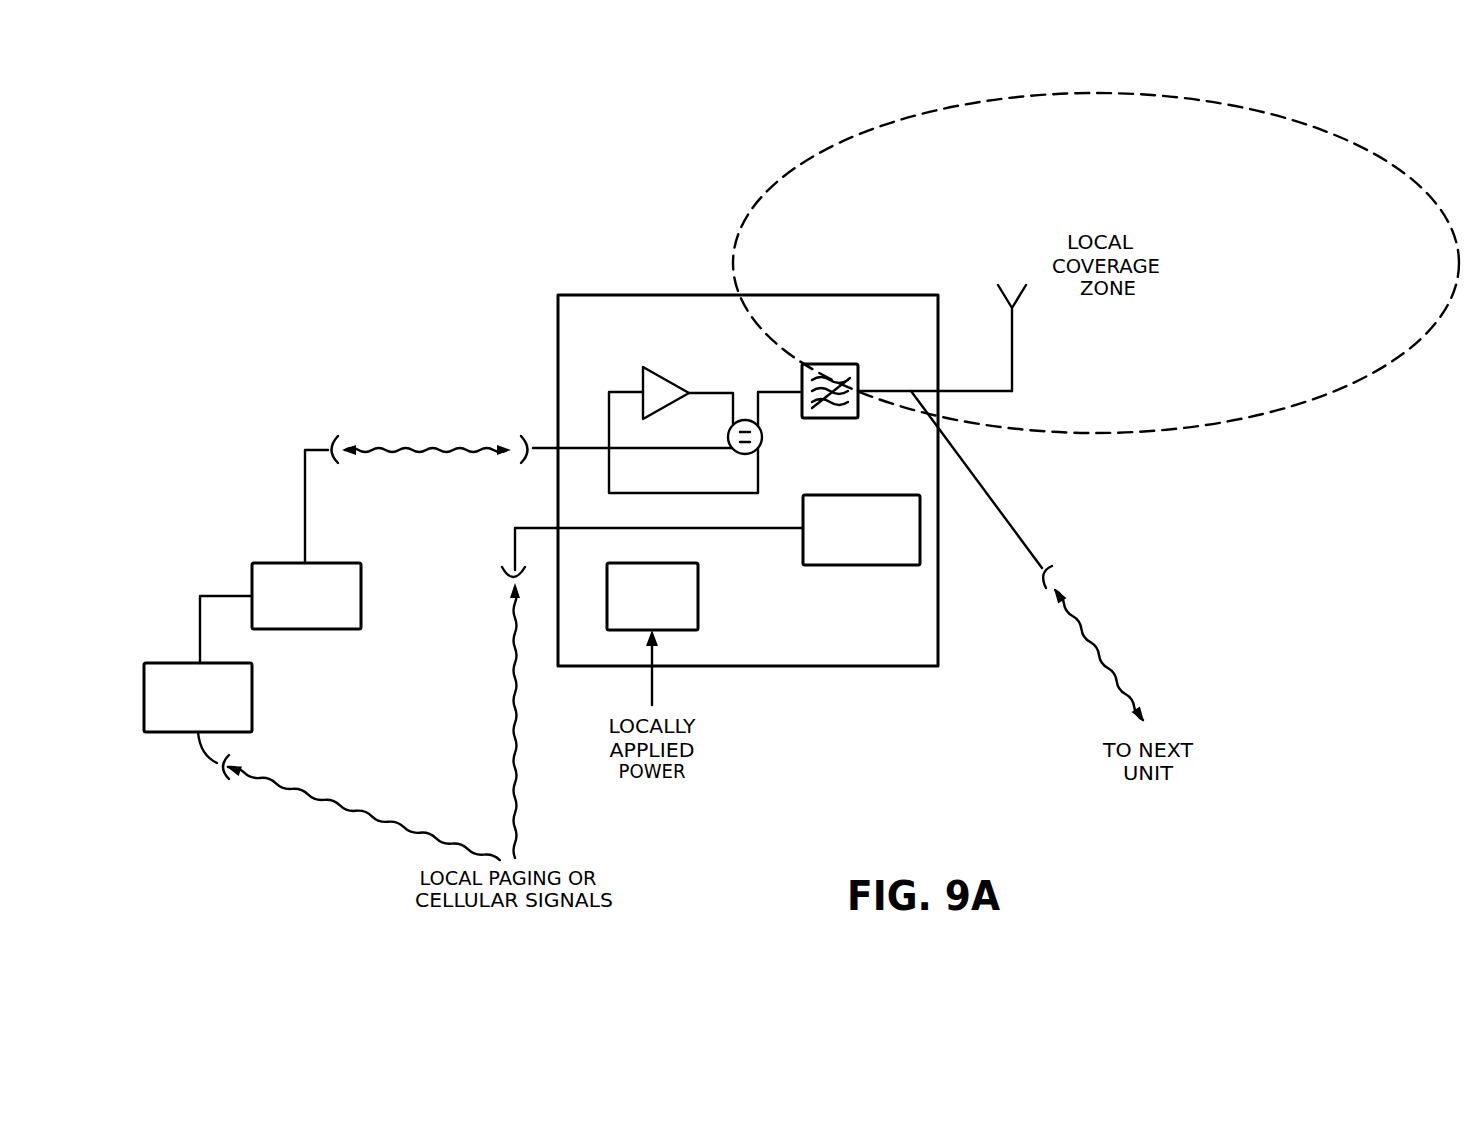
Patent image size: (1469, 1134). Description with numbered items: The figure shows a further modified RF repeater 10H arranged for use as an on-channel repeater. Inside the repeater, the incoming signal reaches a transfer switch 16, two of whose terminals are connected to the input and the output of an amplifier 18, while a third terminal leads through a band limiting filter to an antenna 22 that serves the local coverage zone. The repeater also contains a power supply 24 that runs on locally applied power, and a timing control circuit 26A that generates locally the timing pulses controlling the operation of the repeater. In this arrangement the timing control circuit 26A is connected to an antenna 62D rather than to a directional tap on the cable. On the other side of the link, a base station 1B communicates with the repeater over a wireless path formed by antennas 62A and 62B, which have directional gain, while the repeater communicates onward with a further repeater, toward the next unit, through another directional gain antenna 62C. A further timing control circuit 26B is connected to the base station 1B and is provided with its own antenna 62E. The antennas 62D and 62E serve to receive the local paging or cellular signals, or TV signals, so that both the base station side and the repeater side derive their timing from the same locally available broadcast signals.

The RF repeater 10H is at (538, 320).
The amplifier 18 is at (662, 377).
The transfer switch 16 is at (763, 436).
The antenna 22 is at (1012, 342).
The power supply 24 is at (698, 608).
The timing control circuit 26A is at (923, 565).
The timing control circuit 26B is at (252, 697).
The base station 1B is at (361, 604).
The antenna 62A is at (333, 436).
The antenna 62B is at (532, 436).
The antenna 62C is at (1036, 568).
The antenna 62D is at (508, 567).
The antenna 62E is at (212, 763).